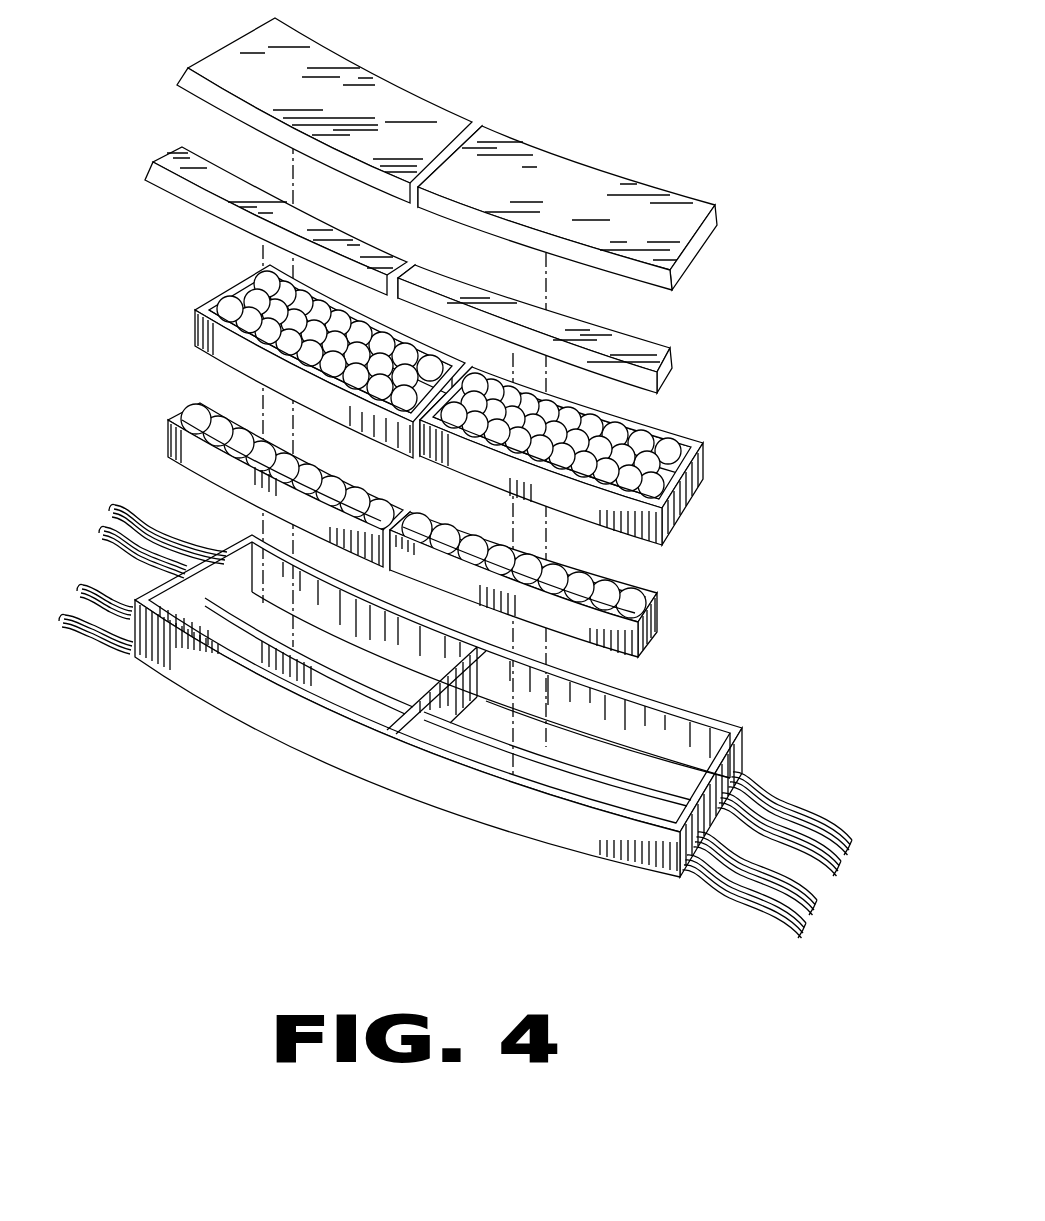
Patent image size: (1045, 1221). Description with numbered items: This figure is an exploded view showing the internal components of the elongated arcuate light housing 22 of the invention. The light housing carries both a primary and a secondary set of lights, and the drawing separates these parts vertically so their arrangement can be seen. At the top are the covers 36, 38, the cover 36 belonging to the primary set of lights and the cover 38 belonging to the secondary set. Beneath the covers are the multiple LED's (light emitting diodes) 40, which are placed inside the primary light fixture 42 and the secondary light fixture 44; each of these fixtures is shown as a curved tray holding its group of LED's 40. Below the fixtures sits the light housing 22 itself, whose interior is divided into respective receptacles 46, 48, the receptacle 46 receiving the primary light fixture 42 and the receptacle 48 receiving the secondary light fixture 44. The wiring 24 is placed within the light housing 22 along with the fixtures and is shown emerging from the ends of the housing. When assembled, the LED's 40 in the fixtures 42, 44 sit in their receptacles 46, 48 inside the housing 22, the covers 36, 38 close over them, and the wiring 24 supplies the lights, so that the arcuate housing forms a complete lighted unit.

The light housing 22 is at (509, 706).
The wiring 24 is at (763, 903).
The cover 36 is at (430, 103).
The cover 38 is at (632, 330).
The LED's (light emitting diodes) 40 is at (200, 407).
The primary light fixture 42 is at (453, 456).
The secondary light fixture 44 is at (453, 456).
The receptacle 46 is at (600, 750).
The receptacle 48 is at (598, 795).